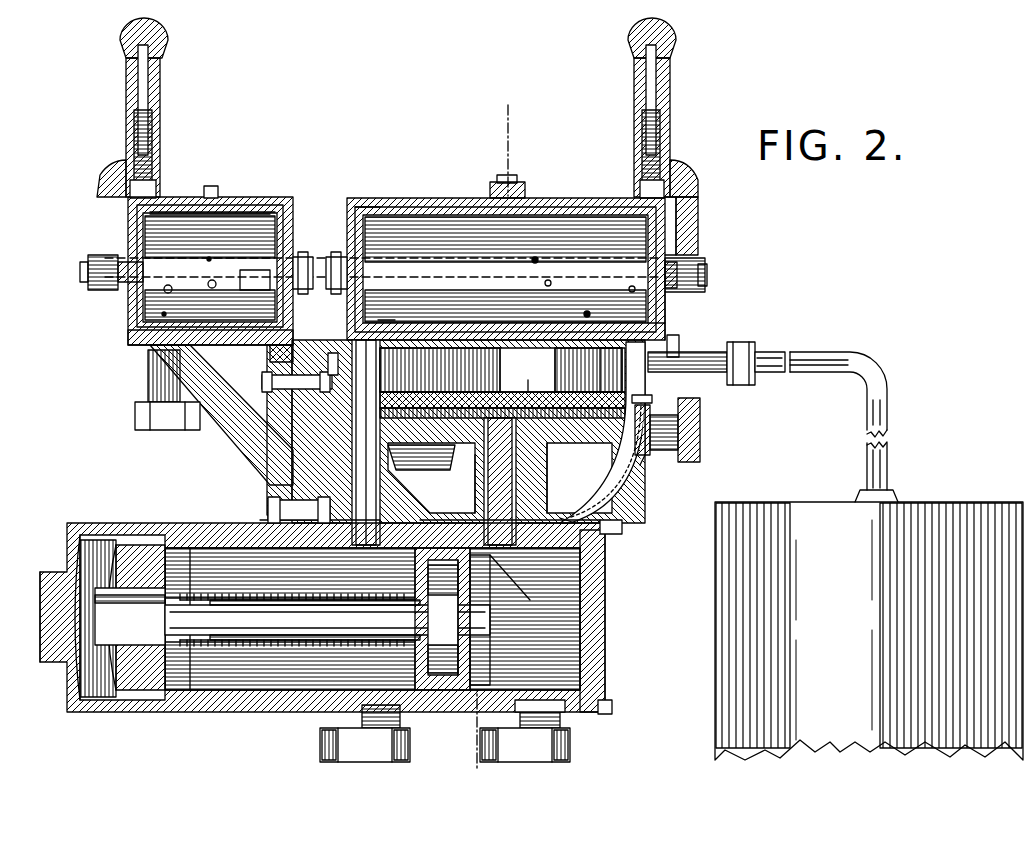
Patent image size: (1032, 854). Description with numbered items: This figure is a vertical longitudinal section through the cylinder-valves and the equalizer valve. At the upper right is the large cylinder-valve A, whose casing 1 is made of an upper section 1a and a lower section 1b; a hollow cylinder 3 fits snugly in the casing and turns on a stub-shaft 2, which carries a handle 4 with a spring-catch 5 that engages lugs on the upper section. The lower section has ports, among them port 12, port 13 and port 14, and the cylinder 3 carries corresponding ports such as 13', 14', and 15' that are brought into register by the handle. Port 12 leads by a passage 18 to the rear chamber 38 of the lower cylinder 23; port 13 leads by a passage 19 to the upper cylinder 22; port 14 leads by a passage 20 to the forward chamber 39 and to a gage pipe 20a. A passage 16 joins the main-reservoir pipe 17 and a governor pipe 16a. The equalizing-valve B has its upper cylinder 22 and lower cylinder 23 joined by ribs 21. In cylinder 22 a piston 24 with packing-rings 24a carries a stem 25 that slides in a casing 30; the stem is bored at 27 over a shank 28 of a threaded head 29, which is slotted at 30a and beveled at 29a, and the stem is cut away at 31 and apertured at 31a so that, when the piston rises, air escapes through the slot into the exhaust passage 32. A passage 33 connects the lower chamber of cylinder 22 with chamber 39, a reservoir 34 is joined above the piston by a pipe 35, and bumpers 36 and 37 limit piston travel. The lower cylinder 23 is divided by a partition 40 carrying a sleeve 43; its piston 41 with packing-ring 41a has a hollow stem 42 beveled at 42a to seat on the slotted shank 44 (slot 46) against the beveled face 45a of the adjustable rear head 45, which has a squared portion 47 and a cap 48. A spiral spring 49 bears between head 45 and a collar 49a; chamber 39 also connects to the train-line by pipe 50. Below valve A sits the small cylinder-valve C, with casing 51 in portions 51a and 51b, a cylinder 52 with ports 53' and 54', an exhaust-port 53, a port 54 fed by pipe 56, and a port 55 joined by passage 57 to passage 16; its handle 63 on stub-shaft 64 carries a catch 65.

The casing 1 is at (495, 257).
The upper section of casing 1a is at (372, 206).
The lower section of casing 1b is at (670, 305).
The stub-shaft 2 is at (690, 260).
The hollow cylinder 3 is at (486, 436).
The handle 4 is at (696, 205).
The spring-catch 5 is at (678, 176).
The port 12 is at (383, 318).
The port 13 is at (578, 367).
The cylinder-port 13' is at (597, 300).
The port 14 is at (675, 313).
The cylinder-port 14' is at (633, 276).
The cylinder-port 15' is at (525, 269).
The passage 16 is at (268, 410).
The pipe 16a is at (421, 466).
The pipe 17 is at (365, 733).
The passage 18 is at (262, 456).
The passage 19 is at (680, 343).
The passage 20 is at (630, 470).
The pipe 20a is at (700, 430).
The ribs 21 is at (405, 505).
The upper cylinder 22 is at (700, 350).
The lower cylinder 23 is at (232, 532).
The piston 24 is at (605, 370).
The packing-rings 24a is at (648, 395).
The stem 25 is at (516, 386).
The bore 27 is at (560, 468).
The shank 28 is at (484, 481).
The threaded head 29 is at (586, 520).
The bevel 29a is at (484, 496).
The casing 30 is at (579, 478).
The slot 30a is at (612, 498).
The cut-away 31 is at (612, 468).
The transverse aperture 31a is at (608, 498).
The passage 32 is at (612, 484).
The passage 33 is at (610, 450).
The reservoir 34 is at (869, 631).
The pipe 35 is at (868, 360).
The bumper 36 is at (512, 370).
The bumper 37 is at (540, 370).
The rear chamber 38 is at (205, 545).
The forward chamber 39 is at (577, 621).
The transverse partition 40 is at (442, 619).
The piston 41 is at (490, 648).
The packing-ring 41a is at (565, 607).
The hollow stem 42 is at (454, 617).
The bevel 42a is at (240, 636).
The sleeve 43 is at (385, 636).
The hollow shank 44 is at (193, 636).
The rear head 45 is at (85, 555).
The beveled inner face 45a is at (180, 700).
The slot 46 is at (262, 636).
The squared portion 47 is at (72, 628).
The cap 48 is at (66, 598).
The spiral spring 49 is at (300, 635).
The collar 49a is at (352, 636).
The pipe 50 is at (525, 733).
The casing 51 is at (294, 212).
The upper portion of casing 51a is at (196, 200).
The lower portion of casing 51b is at (300, 290).
The cylinder 52 is at (255, 281).
The exhaust-port 53 is at (209, 294).
The cylinder-port 53' is at (227, 194).
The port 54 is at (198, 334).
The cylinder-port 54' is at (181, 277).
The port 55 is at (288, 337).
The pipe 56 is at (148, 379).
The passage 57 is at (300, 374).
The handle 63 is at (120, 172).
The stub-shaft 64 is at (98, 255).
The spring-actuated catch 65 is at (156, 189).
The large cylinder-valve A is at (574, 184).
The equalizing-valve B is at (643, 515).
The small cylinder-valve C is at (210, 194).